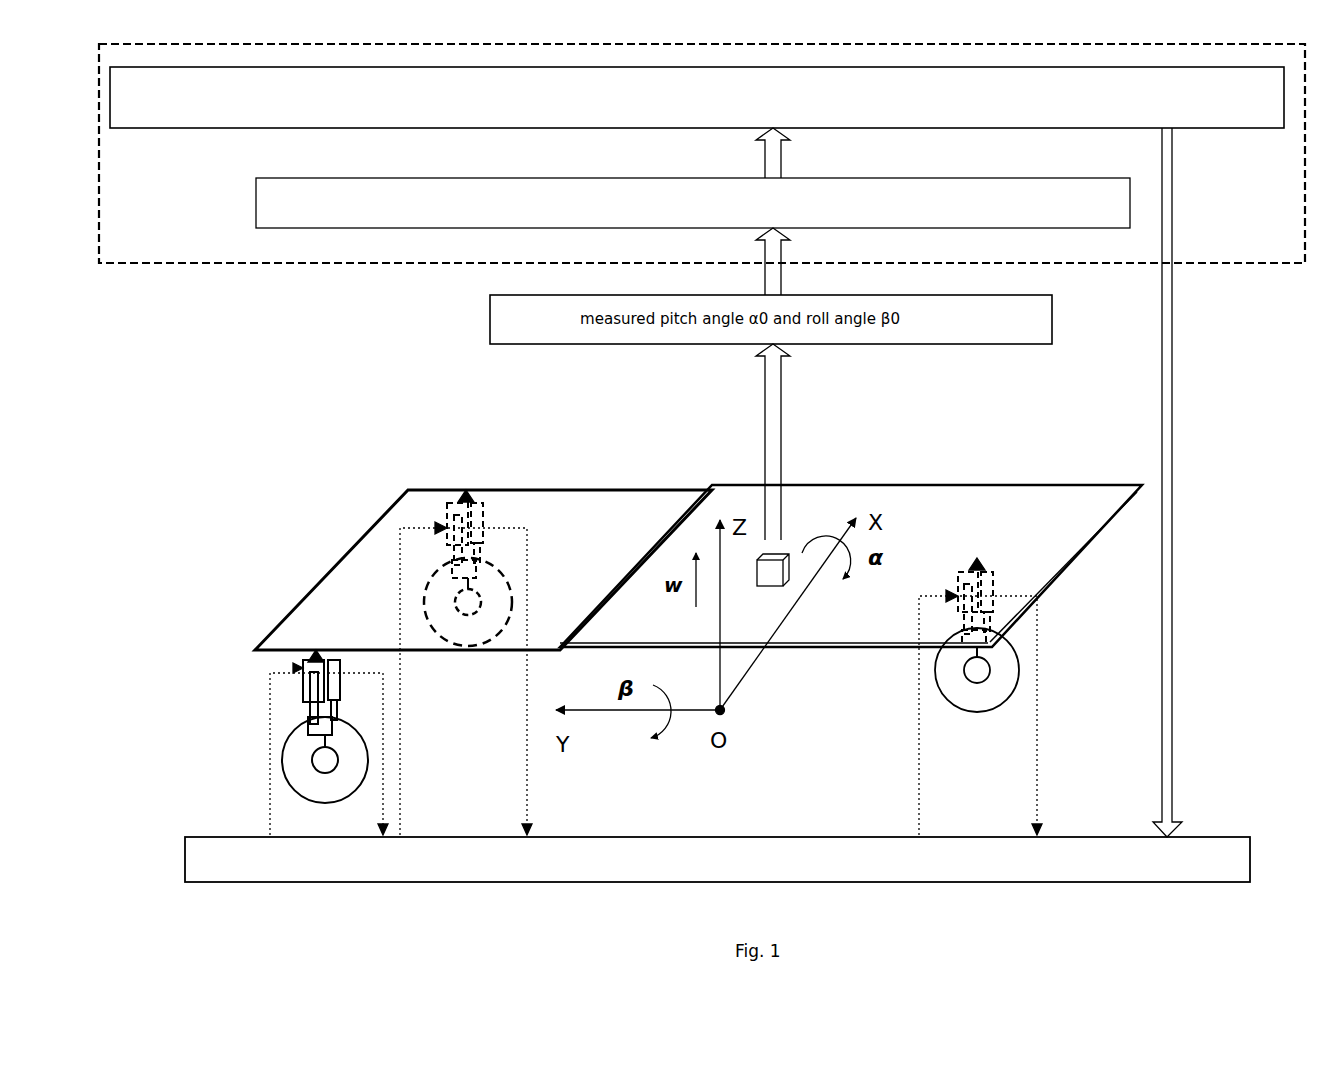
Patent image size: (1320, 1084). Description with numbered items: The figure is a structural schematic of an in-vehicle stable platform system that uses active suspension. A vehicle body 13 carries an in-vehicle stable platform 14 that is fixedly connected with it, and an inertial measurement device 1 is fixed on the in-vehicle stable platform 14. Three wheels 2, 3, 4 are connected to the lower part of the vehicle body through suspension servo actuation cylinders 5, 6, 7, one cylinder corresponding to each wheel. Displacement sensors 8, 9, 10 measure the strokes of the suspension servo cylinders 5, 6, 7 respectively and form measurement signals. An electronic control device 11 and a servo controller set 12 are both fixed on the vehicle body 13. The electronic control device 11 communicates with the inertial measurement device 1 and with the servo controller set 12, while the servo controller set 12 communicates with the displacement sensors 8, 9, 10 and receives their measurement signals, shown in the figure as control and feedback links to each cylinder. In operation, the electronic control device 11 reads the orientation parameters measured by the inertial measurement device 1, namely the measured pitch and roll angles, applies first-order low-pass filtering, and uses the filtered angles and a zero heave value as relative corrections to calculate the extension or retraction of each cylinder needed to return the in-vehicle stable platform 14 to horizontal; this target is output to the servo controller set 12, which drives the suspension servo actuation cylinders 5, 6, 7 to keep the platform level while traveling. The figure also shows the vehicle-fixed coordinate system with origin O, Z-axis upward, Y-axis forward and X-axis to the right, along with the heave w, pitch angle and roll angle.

The inertial measurement device 1 is at (762, 570).
The wheel 2 is at (485, 648).
The wheel 3 is at (338, 796).
The wheel 4 is at (997, 705).
The suspension servo actuation cylinder 5 is at (447, 520).
The suspension servo actuation cylinder 6 is at (300, 660).
The suspension servo actuation cylinder 7 is at (962, 588).
The displacement sensor 8 is at (488, 515).
The displacement sensor 9 is at (338, 660).
The displacement sensor 10 is at (1000, 580).
The electronic control device 11 is at (328, 265).
The servo controller set 12 is at (717, 859).
The vehicle body 13 is at (372, 542).
The in-vehicle stable platform 14 is at (1010, 522).